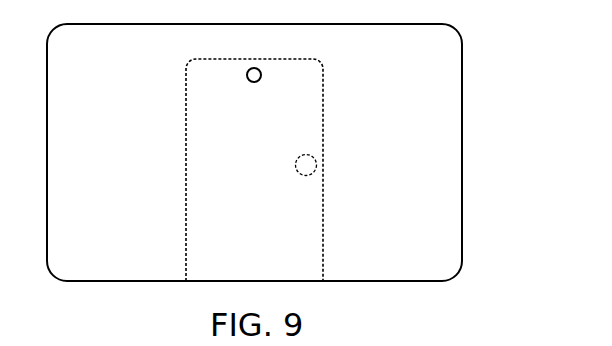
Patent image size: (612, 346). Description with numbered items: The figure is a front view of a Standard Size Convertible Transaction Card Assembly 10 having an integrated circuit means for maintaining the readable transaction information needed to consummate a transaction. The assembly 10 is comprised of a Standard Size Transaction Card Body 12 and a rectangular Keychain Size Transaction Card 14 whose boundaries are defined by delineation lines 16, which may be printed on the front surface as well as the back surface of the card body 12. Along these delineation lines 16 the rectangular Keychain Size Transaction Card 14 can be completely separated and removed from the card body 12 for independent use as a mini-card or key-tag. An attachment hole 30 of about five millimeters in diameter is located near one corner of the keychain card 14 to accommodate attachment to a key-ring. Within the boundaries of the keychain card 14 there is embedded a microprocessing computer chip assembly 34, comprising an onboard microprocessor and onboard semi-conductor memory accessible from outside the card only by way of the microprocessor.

The Standard Size Convertible Transaction Card Assembly 10 is at (291, 152).
The Standard Size Transaction Card Body 12 is at (448, 122).
The rectangular Keychain Size Transaction Card 14 is at (275, 140).
The delineation lines 16 is at (295, 57).
The attachment hole 30 is at (251, 67).
The microprocessing computer chip assembly 34 is at (310, 154).